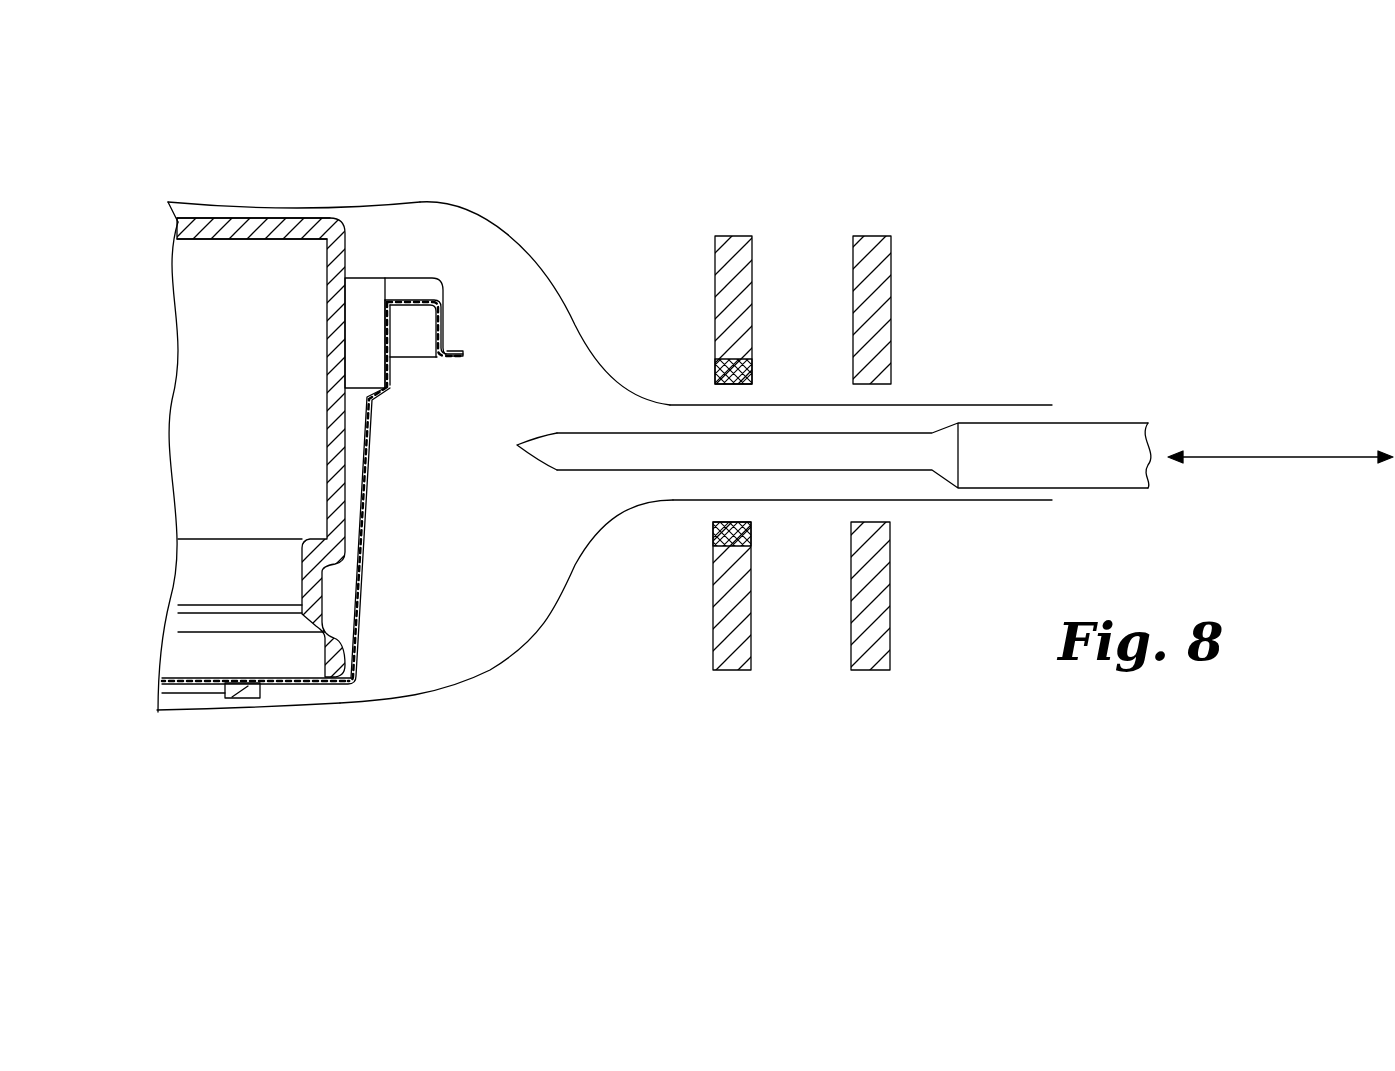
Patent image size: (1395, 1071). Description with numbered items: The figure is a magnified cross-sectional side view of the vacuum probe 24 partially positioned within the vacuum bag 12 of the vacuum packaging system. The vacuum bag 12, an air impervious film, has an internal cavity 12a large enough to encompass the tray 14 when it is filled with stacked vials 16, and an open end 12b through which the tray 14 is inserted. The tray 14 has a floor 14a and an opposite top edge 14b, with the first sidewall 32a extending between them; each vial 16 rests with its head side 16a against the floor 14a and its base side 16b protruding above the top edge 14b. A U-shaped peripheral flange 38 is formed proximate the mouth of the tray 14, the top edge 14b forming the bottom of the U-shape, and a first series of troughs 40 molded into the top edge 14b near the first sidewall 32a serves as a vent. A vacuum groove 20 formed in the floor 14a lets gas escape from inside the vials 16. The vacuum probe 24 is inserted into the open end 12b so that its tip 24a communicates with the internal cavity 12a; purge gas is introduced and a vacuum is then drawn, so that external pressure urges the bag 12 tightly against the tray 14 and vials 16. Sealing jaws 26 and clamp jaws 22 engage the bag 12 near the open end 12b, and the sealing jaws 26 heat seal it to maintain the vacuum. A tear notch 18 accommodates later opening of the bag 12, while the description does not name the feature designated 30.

The vacuum bag 12 is at (383, 212).
The internal cavity 12a is at (478, 248).
The open end 12b is at (1057, 497).
The tray 14 is at (348, 580).
The floor 14a is at (300, 687).
The top edge 14b is at (370, 278).
The vial 16 is at (224, 360).
The head side 16a is at (214, 648).
The base side 16b is at (197, 217).
The tear notch 18 is at (798, 500).
The vacuum groove 20 is at (241, 687).
The clamp jaws 22 is at (878, 247).
The vacuum probe 24 is at (1100, 473).
The tip 24a is at (517, 445).
The sealing jaws 26 is at (742, 247).
The cavity 30 is at (360, 515).
The first sidewall 32a is at (365, 470).
The U-shaped peripheral flange 38 is at (472, 325).
The first series of troughs 40 is at (413, 288).